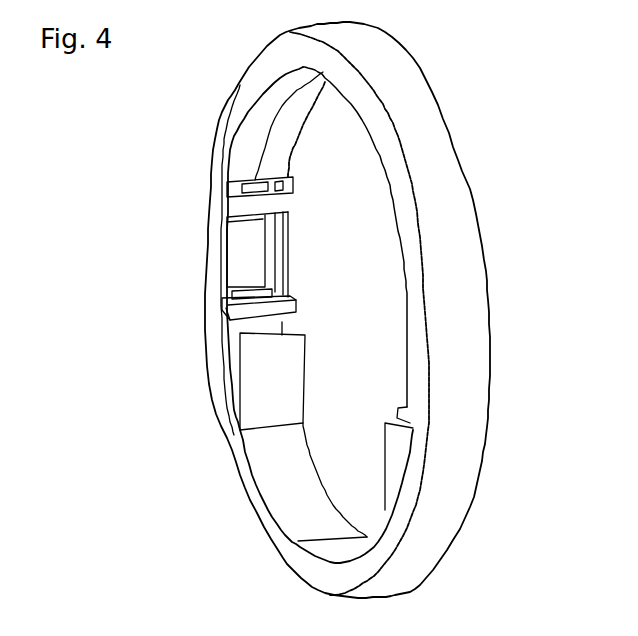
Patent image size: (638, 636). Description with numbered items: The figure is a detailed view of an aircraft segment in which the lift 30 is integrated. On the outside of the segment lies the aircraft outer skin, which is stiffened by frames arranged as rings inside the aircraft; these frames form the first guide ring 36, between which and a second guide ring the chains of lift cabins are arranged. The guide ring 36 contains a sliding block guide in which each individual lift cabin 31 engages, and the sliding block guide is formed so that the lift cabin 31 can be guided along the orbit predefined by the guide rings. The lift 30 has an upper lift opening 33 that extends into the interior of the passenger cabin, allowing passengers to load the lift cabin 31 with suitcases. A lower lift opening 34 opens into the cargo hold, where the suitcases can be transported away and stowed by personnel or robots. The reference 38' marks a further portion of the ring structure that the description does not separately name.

The lift 30 is at (468, 143).
The inner rim of ring 38' is at (232, 313).
The first guide ring 36 is at (283, 163).
The lift cabin 31 is at (245, 240).
The upper lift opening 33 is at (250, 258).
The lower lift opening 34 is at (243, 333).